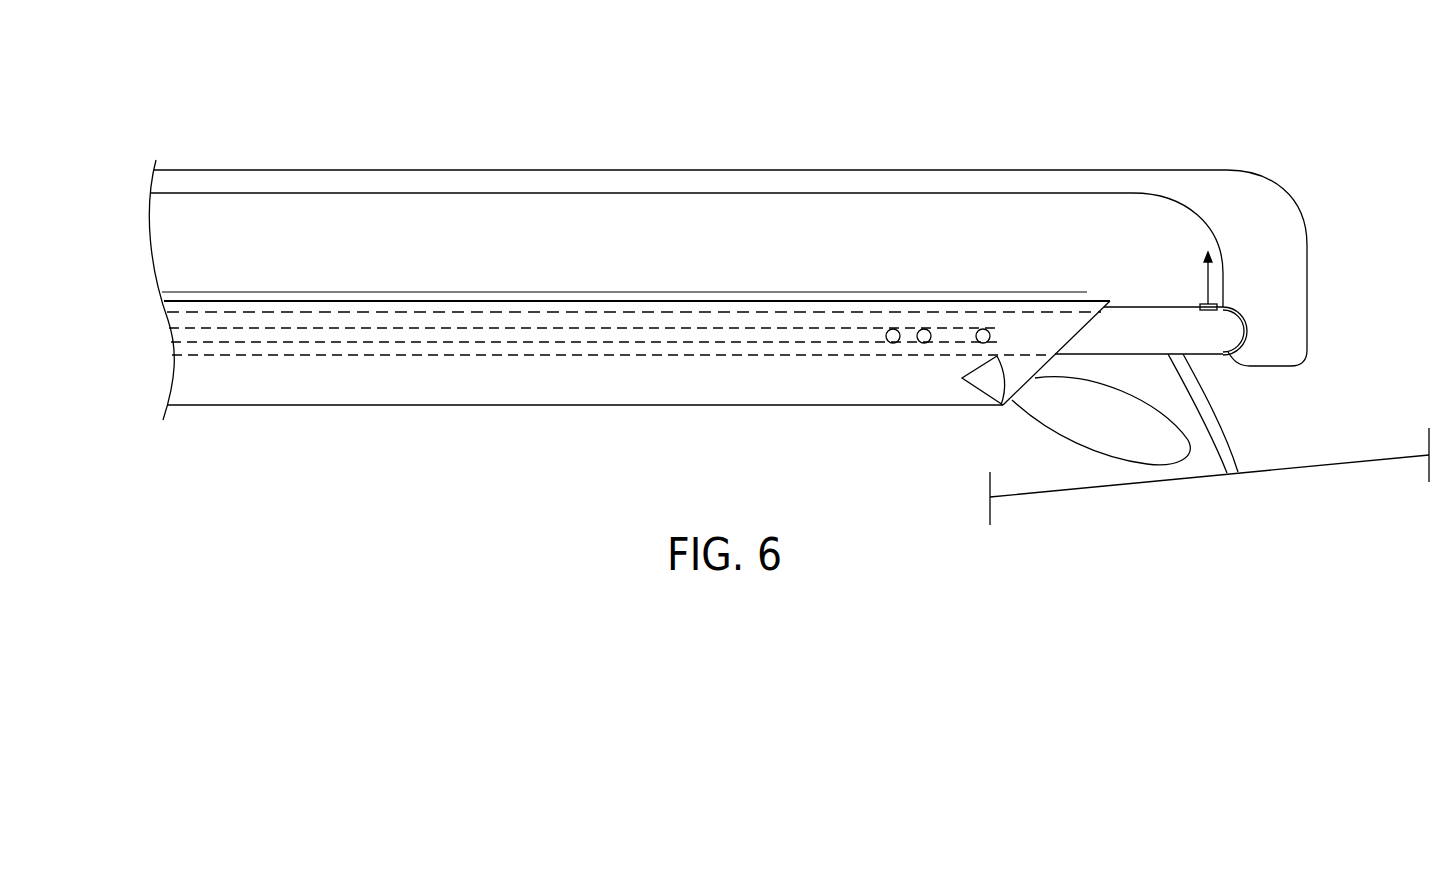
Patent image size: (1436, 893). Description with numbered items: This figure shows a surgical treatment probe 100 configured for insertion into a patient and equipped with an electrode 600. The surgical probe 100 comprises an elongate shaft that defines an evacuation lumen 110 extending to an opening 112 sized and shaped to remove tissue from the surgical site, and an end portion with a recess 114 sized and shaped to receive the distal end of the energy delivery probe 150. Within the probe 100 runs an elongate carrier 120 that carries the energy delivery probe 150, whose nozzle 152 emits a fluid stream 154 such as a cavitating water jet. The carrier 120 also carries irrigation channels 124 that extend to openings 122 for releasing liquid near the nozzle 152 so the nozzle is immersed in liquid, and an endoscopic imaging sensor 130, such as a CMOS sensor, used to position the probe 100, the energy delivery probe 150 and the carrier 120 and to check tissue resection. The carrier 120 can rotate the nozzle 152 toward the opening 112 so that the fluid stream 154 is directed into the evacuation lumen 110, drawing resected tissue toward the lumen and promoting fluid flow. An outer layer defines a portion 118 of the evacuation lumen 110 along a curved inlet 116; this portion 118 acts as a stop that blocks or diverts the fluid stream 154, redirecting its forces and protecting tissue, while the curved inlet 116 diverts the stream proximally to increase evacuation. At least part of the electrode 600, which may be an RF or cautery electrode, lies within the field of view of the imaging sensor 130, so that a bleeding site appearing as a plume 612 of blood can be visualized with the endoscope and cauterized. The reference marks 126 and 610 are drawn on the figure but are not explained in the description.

The surgical probe 100 is at (237, 88).
The evacuation lumen 110 is at (618, 230).
The opening 112 is at (1223, 272).
The recess 114 is at (1247, 331).
The curved inlet 116 is at (1182, 212).
The portion of the evacuation lumen 118 is at (1215, 243).
The elongate carrier 120 is at (512, 408).
The openings 122 is at (983, 328).
The irrigation channels 124 is at (620, 343).
The bottom wall 126 is at (218, 355).
The imaging sensor 130 is at (991, 406).
The energy delivery probe 150 is at (1134, 359).
The nozzle 152 is at (1208, 312).
The fluid stream 154 is at (1208, 282).
The electrode 600 is at (1040, 418).
The distance 610 is at (1037, 497).
The plume 612 is at (1220, 425).